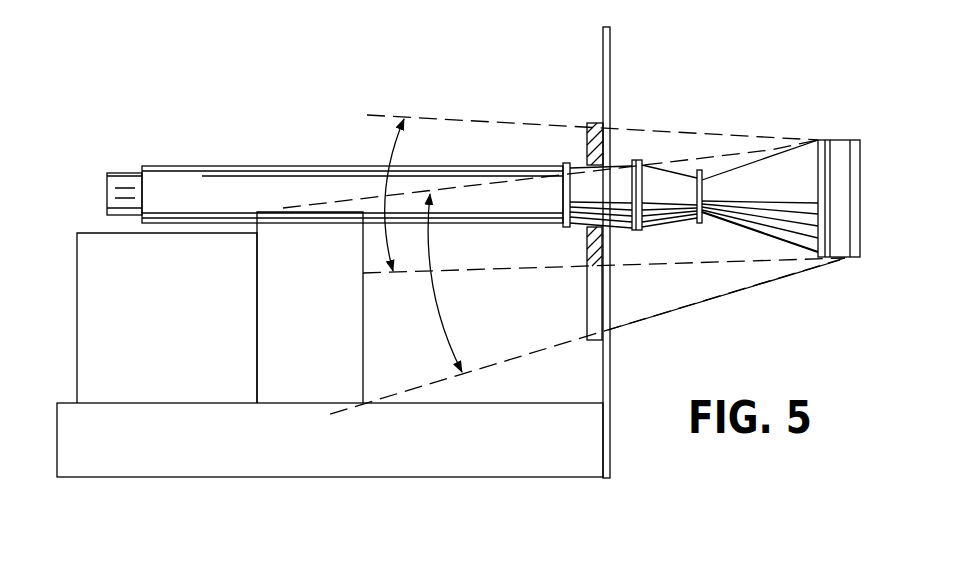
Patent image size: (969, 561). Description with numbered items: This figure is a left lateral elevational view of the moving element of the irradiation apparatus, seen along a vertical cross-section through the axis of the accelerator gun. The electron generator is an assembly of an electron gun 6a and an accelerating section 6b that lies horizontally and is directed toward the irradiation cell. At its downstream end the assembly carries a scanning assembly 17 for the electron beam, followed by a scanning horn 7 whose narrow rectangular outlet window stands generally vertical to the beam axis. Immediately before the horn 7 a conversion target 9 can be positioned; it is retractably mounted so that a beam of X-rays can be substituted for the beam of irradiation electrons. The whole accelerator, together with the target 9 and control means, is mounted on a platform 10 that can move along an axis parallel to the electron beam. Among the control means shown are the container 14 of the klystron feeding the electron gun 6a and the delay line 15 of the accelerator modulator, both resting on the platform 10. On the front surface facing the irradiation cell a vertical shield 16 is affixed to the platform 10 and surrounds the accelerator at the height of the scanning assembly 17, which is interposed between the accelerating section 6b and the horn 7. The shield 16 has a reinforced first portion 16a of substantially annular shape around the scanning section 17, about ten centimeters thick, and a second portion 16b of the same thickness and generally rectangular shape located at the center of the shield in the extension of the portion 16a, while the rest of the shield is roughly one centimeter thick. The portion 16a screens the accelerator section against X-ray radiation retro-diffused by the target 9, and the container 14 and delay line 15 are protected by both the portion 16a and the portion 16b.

The platform 10 is at (262, 479).
The container of a klystron 14 is at (90, 231).
The delay line of the modulator 15 is at (266, 207).
The electron gun 6a is at (124, 187).
The accelerating section 6b is at (303, 182).
The shield 16 is at (613, 55).
The first portion of the shield 16a is at (587, 140).
The second portion of the shield 16b is at (597, 293).
The scanning assembly 17 is at (645, 154).
The scanning horn 7 is at (752, 159).
The conversion target 9 is at (859, 139).